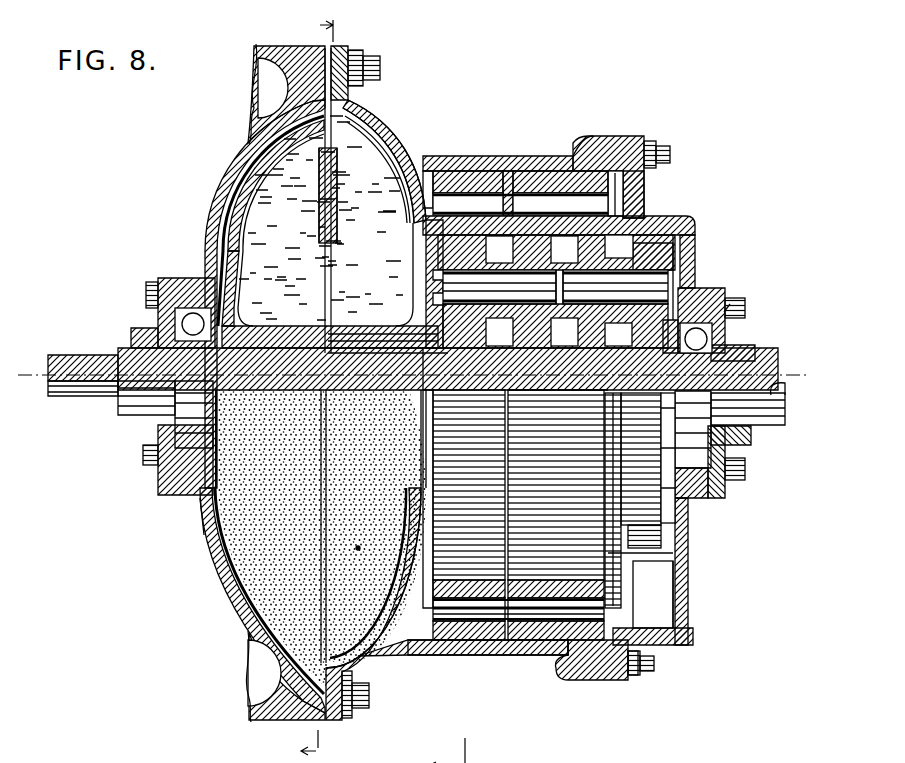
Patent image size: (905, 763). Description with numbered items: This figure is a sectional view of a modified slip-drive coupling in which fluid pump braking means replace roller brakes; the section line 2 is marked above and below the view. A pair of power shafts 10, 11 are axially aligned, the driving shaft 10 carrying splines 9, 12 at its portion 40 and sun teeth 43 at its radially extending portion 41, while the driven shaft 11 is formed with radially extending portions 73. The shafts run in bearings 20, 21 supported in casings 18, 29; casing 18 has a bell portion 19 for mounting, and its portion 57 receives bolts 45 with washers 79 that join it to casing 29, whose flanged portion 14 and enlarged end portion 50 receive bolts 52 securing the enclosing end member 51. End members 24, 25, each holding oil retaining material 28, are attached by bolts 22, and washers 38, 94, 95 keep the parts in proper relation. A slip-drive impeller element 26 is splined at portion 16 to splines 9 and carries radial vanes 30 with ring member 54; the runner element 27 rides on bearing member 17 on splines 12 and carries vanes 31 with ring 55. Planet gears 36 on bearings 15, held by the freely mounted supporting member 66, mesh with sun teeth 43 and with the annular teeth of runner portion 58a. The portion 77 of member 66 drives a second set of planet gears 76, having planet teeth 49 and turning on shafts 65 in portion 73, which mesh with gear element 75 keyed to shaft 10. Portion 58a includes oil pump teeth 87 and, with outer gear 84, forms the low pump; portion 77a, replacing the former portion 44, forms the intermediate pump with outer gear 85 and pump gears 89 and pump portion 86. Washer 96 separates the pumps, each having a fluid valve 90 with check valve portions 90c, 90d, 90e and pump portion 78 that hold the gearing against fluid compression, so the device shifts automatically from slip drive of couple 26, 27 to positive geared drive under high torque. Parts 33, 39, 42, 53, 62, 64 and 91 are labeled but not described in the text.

The section line 2 is at (308, 385).
The splines 9 is at (476, 64).
The power shaft 10 is at (62, 382).
The power shaft 11 is at (772, 412).
The splines 12 is at (352, 346).
The axially extending flanged portion 14 is at (490, 148).
The bearing 15 is at (499, 287).
The splined portion 16 is at (236, 316).
The bearing member 17 is at (345, 326).
The casing 18 is at (222, 586).
The bell portion 19 is at (240, 698).
The bearing 20 is at (175, 404).
The bearing 21 is at (690, 500).
The bolts 22 is at (137, 448).
The end member 24 is at (150, 278).
The end member 25 is at (712, 282).
The impeller member 26 is at (232, 178).
The runner element 27 is at (360, 95).
The oil retaining material 28 is at (150, 332).
The casing 29 is at (382, 118).
The vanes 30 is at (304, 182).
The vanes 31 is at (335, 162).
The support ring 33 is at (422, 238).
The planet gears 36 is at (428, 290).
The washer 38 is at (708, 290).
The baffle plate 39 is at (313, 470).
The shaft portion 40 is at (448, 369).
The radially extending portion 41 is at (451, 364).
The housing flange 42 is at (415, 165).
The sun teeth 43 is at (378, 336).
The portion 44 is at (597, 423).
The bolts 45 is at (368, 52).
The planet teeth 49 is at (597, 400).
The enlarged end portion 50 is at (600, 135).
The enclosing end member 51 is at (672, 582).
The bolts 52 is at (646, 660).
The stator plate 53 is at (622, 212).
The ring member 54 is at (311, 224).
The ring member 55 is at (355, 206).
The casing portion 57 is at (262, 56).
The annular gear portion 58a is at (418, 207).
The shell wall 62 is at (210, 542).
The winding slot 64 is at (628, 237).
The shafts 65 is at (612, 288).
The supporting member 66 is at (555, 331).
The radially extending portion 73 is at (651, 350).
The gear element 75 is at (558, 372).
The planet gears 76 is at (604, 168).
The member portion 77 is at (556, 243).
The oil pump teeth 77a is at (582, 483).
The pump portion 78 is at (425, 265).
The washers 79 is at (355, 708).
The toothed portion 84 is at (520, 170).
The toothed portion 85 is at (620, 135).
The pump portion 86 is at (598, 672).
The oil pump teeth 87 is at (447, 170).
The oil pump gears 89 is at (490, 170).
The fluid valve 90 is at (405, 684).
The check valve portion 90c is at (653, 594).
The check valve portion 90d is at (625, 547).
The check valve portion 90e is at (675, 614).
The flange bolt 91 is at (660, 145).
The washer 94 is at (220, 280).
The spacing washer 95 is at (305, 342).
The washer 96 is at (570, 140).